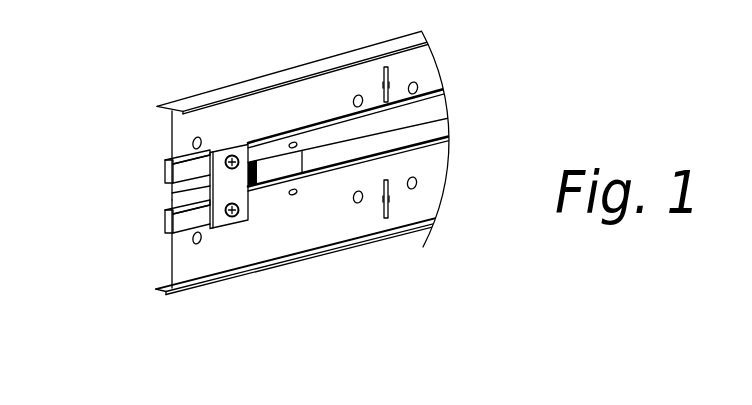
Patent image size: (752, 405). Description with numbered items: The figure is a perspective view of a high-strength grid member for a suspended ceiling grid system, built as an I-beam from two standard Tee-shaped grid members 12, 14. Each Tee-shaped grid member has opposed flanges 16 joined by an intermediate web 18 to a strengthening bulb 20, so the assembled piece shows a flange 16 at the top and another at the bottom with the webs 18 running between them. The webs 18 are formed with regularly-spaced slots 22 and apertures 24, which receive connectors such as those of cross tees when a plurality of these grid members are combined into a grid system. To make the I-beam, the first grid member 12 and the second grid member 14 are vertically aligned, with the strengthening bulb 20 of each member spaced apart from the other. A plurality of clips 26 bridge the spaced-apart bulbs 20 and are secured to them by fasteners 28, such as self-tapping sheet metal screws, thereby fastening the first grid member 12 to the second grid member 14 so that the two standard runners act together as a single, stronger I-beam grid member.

The Tee-shaped grid member 12 is at (178, 268).
The Tee-shaped grid member 14 is at (178, 132).
The flange 16 is at (158, 106).
The web 18 is at (302, 119).
The strengthening bulb 20 is at (164, 172).
The slot 22 is at (390, 70).
The aperture 24 is at (359, 95).
The clip 26 is at (211, 183).
The fastener 28 is at (237, 217).